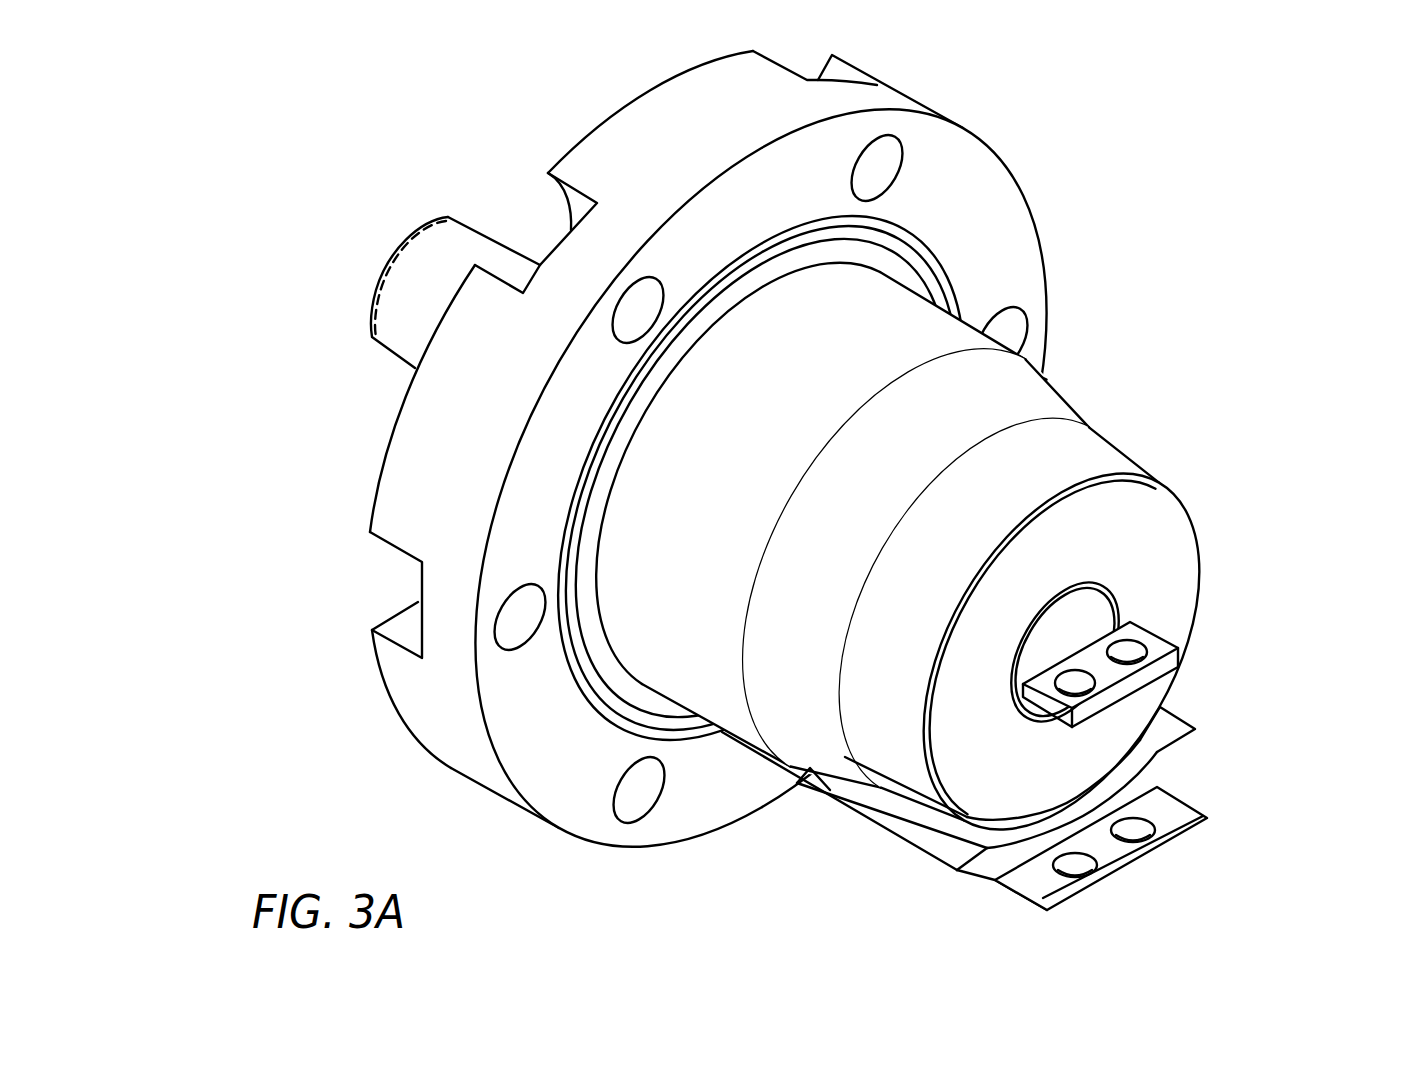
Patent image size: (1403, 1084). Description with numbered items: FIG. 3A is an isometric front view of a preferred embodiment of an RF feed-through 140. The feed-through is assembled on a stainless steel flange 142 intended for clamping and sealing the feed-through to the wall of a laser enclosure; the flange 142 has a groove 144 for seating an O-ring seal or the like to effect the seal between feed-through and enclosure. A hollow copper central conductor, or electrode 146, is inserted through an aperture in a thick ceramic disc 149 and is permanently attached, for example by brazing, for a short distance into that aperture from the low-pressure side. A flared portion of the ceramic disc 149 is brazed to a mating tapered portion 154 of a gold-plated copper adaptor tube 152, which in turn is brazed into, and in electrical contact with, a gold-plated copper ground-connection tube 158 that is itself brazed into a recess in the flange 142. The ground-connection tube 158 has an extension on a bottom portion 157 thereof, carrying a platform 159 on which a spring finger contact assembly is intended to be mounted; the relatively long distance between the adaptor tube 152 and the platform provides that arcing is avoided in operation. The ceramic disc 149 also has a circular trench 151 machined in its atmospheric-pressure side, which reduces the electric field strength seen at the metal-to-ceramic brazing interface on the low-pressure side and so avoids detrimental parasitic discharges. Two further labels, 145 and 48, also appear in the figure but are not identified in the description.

The RF feed-through 140 is at (848, 478).
The housing 48 is at (1231, 384).
The flange 142 is at (1004, 162).
The groove 144 is at (895, 240).
The mounting block 145 is at (1155, 651).
The hollow central conductor 146 is at (487, 229).
The ceramic disc 149 is at (1128, 463).
The circular trench 151 is at (1087, 399).
The adaptor tube 152 is at (958, 372).
The tapered portion 154 is at (1016, 394).
The bottom portion 157 is at (1172, 718).
The ground-connection tube 158 is at (740, 742).
The platform 159 is at (1170, 810).